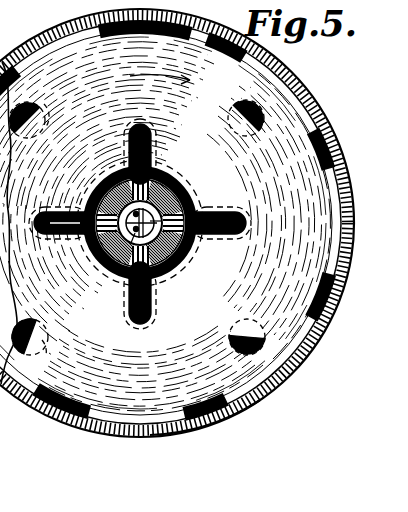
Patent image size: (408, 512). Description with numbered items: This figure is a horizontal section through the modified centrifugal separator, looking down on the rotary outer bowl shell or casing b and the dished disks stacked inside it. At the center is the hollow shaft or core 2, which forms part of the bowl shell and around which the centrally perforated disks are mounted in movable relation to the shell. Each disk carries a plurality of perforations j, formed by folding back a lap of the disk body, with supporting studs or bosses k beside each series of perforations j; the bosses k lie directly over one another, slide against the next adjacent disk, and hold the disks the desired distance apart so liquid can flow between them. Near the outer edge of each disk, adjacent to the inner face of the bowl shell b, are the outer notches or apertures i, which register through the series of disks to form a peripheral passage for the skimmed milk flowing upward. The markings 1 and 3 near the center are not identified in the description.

The hub spindle 1 is at (137, 216).
The central hollow shaft or core 2 is at (162, 221).
The hub spindle pin 3 is at (127, 247).
The studs or bosses k is at (229, 343).
The perforations j is at (54, 366).
The rotary outer bowl shell or rotary casing b is at (303, 358).
The outer apertures or notches i is at (232, 412).